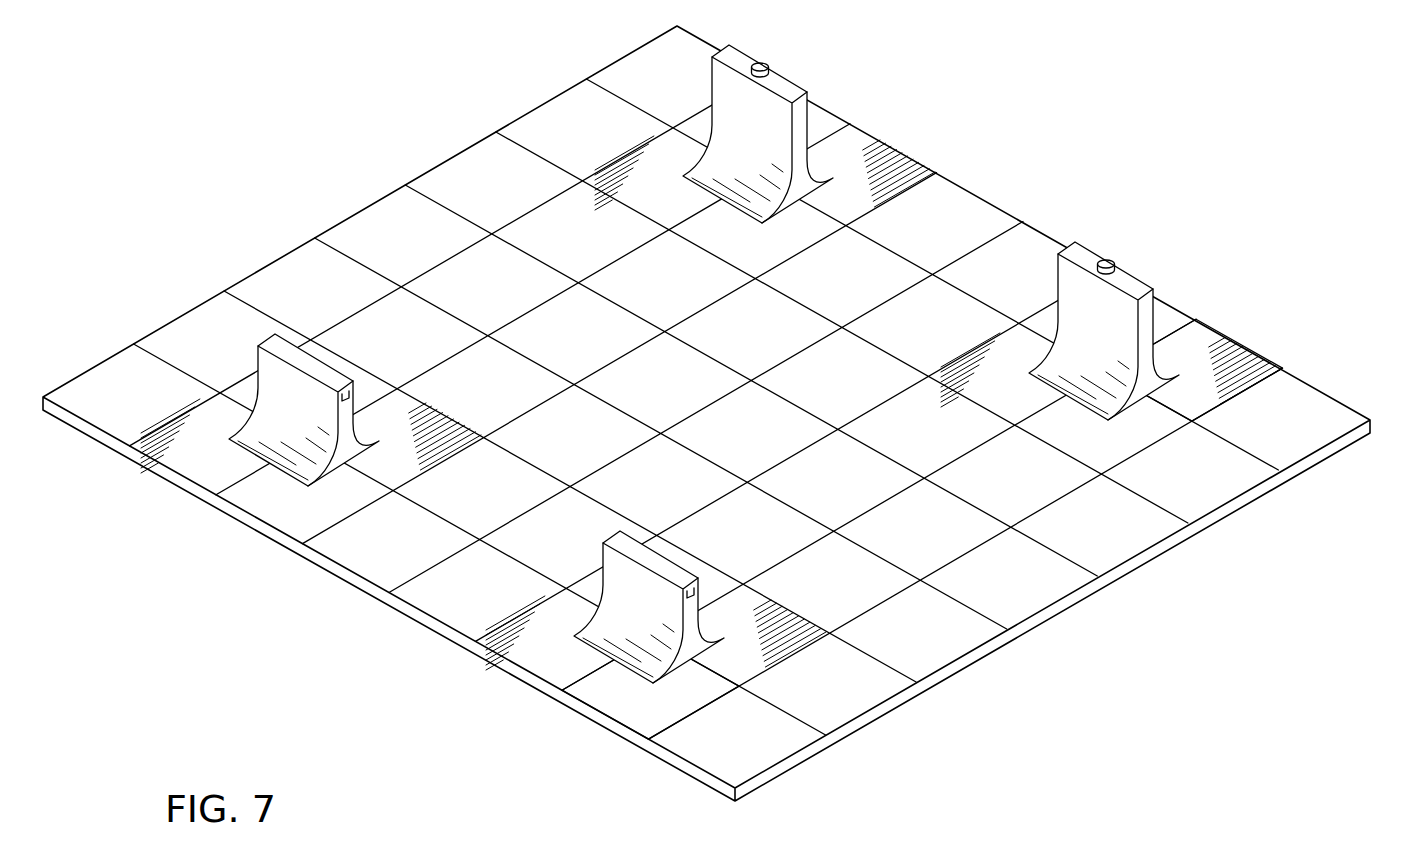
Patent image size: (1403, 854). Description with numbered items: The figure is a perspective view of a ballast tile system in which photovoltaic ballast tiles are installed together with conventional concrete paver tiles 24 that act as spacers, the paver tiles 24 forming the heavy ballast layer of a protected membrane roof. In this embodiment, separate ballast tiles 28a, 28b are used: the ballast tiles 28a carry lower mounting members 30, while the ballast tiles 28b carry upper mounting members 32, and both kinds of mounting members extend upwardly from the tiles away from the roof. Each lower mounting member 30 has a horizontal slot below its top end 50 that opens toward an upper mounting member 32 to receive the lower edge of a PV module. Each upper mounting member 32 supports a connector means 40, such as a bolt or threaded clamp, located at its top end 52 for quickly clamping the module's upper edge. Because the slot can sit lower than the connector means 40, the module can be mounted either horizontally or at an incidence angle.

The concrete paver tile 24 is at (953, 215).
The ballast tile 28a is at (627, 697).
The ballast tile 28b is at (1203, 370).
The lower mounting member 30 is at (655, 597).
The upper mounting member 32 is at (800, 117).
The connector means 40 is at (1108, 257).
The top end of lower mounting member 50 is at (322, 372).
The top end of upper mounting member 52 is at (1135, 285).